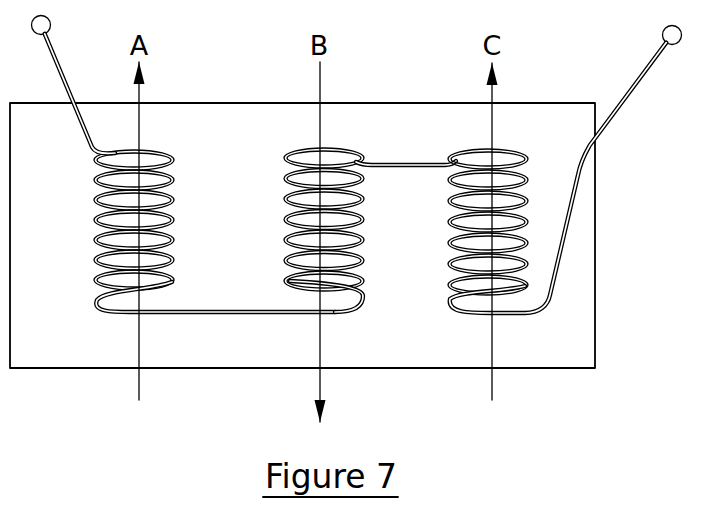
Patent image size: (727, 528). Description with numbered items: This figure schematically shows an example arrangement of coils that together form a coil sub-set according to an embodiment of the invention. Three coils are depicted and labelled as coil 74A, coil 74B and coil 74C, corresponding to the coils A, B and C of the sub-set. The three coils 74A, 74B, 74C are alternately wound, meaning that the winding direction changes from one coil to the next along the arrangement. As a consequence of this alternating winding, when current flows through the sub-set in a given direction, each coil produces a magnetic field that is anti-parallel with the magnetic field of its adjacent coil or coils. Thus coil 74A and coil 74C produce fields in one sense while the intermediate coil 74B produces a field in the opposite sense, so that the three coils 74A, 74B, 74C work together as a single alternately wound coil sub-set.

The coil 74A is at (178, 140).
The coil 74B is at (354, 140).
The coil 74C is at (534, 140).